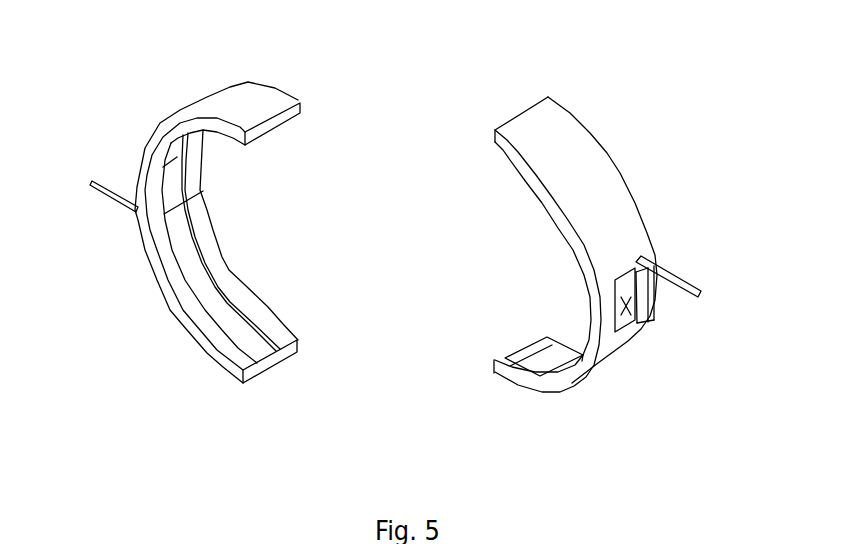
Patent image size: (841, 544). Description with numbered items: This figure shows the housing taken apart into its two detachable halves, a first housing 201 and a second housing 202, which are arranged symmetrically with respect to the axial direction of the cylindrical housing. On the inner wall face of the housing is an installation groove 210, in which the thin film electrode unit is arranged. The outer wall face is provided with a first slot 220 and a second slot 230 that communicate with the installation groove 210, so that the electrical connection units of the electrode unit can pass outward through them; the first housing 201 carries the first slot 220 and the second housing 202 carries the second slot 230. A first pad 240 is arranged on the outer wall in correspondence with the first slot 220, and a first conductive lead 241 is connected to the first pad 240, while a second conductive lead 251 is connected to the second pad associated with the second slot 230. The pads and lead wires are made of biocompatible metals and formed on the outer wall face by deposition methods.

The first housing 201 is at (589, 137).
The second housing 202 is at (233, 100).
The installation groove 210 is at (262, 350).
The first slot 220 is at (656, 363).
The second slot 230 is at (167, 192).
The first pad 240 is at (652, 310).
The first conductive lead 241 is at (690, 283).
The second conductive lead 251 is at (113, 207).